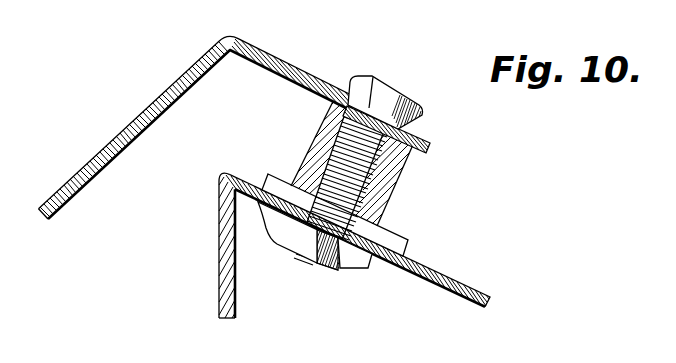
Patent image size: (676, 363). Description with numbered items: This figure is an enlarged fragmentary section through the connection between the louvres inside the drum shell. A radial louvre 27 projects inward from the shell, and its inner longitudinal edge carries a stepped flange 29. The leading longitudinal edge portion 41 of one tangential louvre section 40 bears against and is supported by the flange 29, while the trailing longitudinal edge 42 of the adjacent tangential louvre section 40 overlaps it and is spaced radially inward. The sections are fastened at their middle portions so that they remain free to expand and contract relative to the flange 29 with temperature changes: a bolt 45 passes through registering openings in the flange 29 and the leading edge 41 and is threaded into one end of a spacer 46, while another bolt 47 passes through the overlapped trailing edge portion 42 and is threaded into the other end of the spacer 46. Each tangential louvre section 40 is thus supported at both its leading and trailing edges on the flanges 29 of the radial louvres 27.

The radial louvre 27 is at (219, 297).
The stepped flange 29 is at (358, 263).
The tangential louvre section 40 is at (110, 132).
The leading longitudinal edge portion 41 is at (398, 246).
The trailing longitudinal edge 42 is at (422, 152).
The bolt 45 is at (309, 266).
The spacer 46 is at (387, 185).
The bolt 47 is at (420, 118).